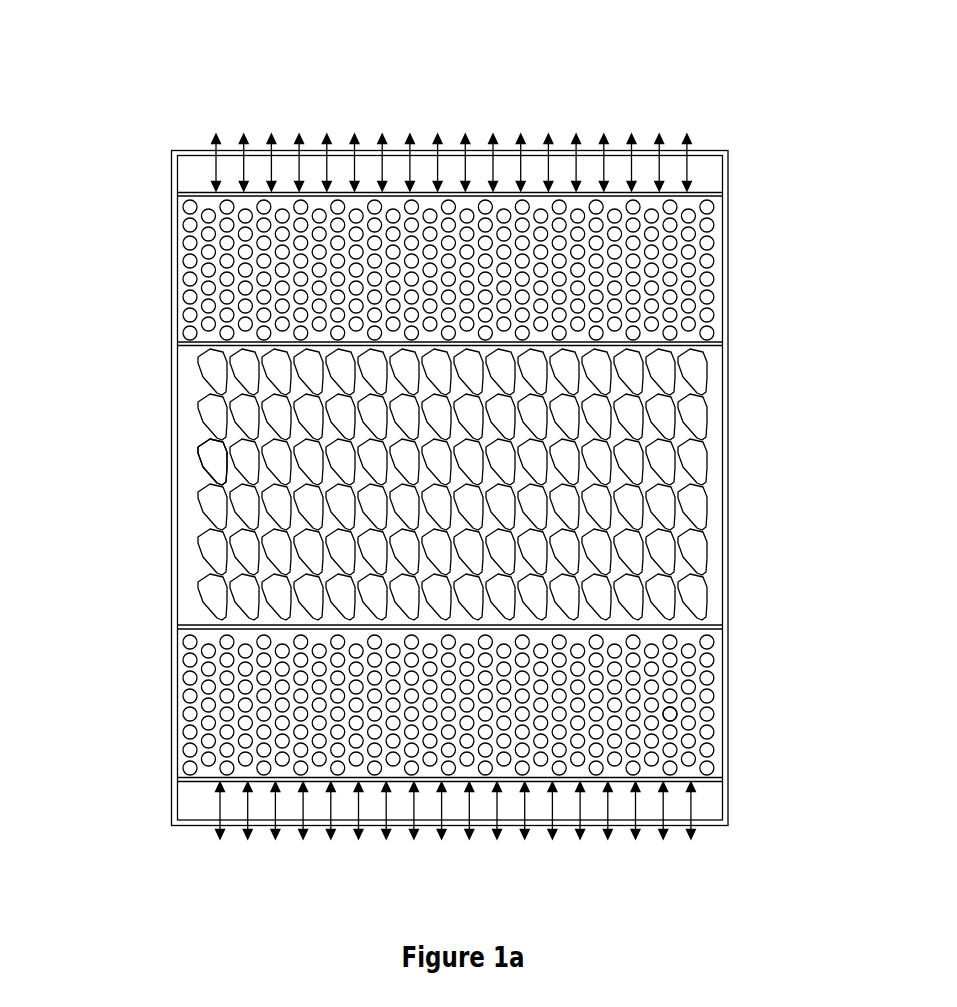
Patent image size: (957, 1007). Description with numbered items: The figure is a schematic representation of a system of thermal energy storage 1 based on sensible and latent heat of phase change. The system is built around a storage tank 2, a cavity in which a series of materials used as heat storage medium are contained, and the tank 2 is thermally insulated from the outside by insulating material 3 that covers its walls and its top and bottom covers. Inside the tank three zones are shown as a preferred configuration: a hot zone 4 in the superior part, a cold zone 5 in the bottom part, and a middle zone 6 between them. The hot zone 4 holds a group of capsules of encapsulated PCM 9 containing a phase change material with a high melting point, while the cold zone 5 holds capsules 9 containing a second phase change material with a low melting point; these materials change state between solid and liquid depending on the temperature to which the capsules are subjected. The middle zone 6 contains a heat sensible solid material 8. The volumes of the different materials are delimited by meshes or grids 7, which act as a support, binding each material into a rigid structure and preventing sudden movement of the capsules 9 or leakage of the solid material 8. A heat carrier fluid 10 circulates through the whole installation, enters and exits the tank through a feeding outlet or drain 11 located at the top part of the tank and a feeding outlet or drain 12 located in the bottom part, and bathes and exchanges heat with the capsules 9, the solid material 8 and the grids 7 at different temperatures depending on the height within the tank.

The system of thermal energy storage 1 is at (495, 165).
The storage tank 2 is at (729, 317).
The insulating material 3 is at (722, 349).
The hot zone 4 is at (190, 263).
The cold zone 5 is at (207, 708).
The middle zone 6 is at (203, 573).
The meshes or grids 7 is at (705, 345).
The heat sensible solid material 8 is at (217, 477).
The capsules of encapsulated PCM 9 is at (670, 715).
The heat carrier fluid 10 is at (423, 202).
The feeding outlet or drain tank located at the top part of the tank 11 is at (217, 168).
The feeding outlet or drain tank located in the bottom part of the tank 12 is at (220, 812).